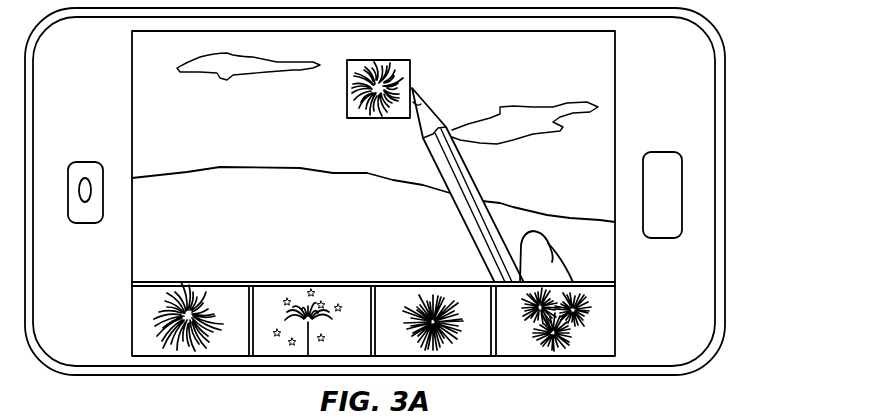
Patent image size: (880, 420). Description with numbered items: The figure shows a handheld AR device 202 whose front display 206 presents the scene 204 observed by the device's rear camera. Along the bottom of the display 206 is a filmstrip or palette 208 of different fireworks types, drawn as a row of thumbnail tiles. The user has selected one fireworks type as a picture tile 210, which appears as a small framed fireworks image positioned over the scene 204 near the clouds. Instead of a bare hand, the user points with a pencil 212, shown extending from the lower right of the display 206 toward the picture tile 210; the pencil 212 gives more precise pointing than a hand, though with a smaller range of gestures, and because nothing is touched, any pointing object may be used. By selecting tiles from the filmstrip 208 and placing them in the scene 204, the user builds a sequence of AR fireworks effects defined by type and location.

The mobile device 202 is at (725, 242).
The scene 204 is at (156, 93).
The front display 206 is at (615, 65).
The filmstrip or palette 208 is at (628, 333).
The picture tile 210 is at (347, 108).
The pencil 212 is at (473, 212).